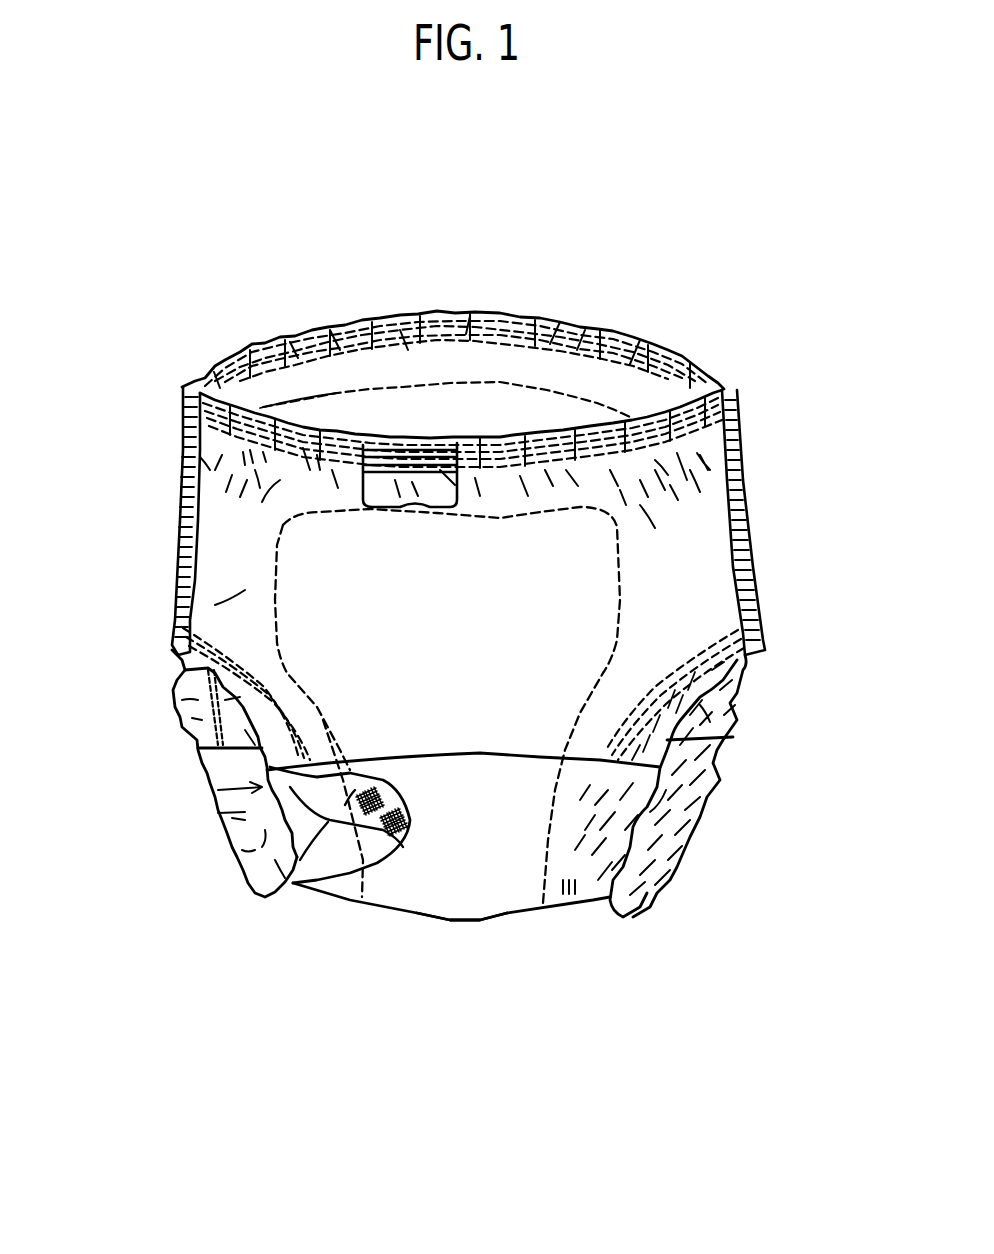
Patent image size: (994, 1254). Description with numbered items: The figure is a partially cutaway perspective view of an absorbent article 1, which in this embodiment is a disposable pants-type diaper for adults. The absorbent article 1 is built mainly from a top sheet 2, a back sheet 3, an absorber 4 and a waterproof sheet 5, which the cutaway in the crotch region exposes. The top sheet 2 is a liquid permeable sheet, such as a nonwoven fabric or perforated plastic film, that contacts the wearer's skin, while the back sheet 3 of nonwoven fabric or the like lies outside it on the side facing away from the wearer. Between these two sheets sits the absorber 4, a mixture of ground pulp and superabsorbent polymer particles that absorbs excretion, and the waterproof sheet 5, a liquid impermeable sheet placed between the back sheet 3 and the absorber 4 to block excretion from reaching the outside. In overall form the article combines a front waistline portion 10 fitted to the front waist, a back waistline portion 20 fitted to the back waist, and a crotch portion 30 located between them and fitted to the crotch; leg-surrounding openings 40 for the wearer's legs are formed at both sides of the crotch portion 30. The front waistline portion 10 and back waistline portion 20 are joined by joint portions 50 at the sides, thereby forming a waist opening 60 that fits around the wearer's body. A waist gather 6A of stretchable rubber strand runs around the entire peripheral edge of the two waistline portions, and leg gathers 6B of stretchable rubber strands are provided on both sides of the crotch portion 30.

The absorbent article 1 is at (667, 243).
The top sheet 2 is at (248, 873).
The back sheet 3 is at (457, 900).
The absorber 4 is at (377, 830).
The waterproof sheet 5 is at (317, 893).
The waist gather 6A is at (380, 457).
The leg gathers 6B is at (205, 707).
The front waistline portion 10 is at (240, 587).
The back waistline portion 20 is at (655, 345).
The crotch portion 30 is at (553, 923).
The leg-surrounding openings 40 is at (215, 827).
The joint portions 50 is at (181, 520).
The waist opening 60 is at (312, 387).